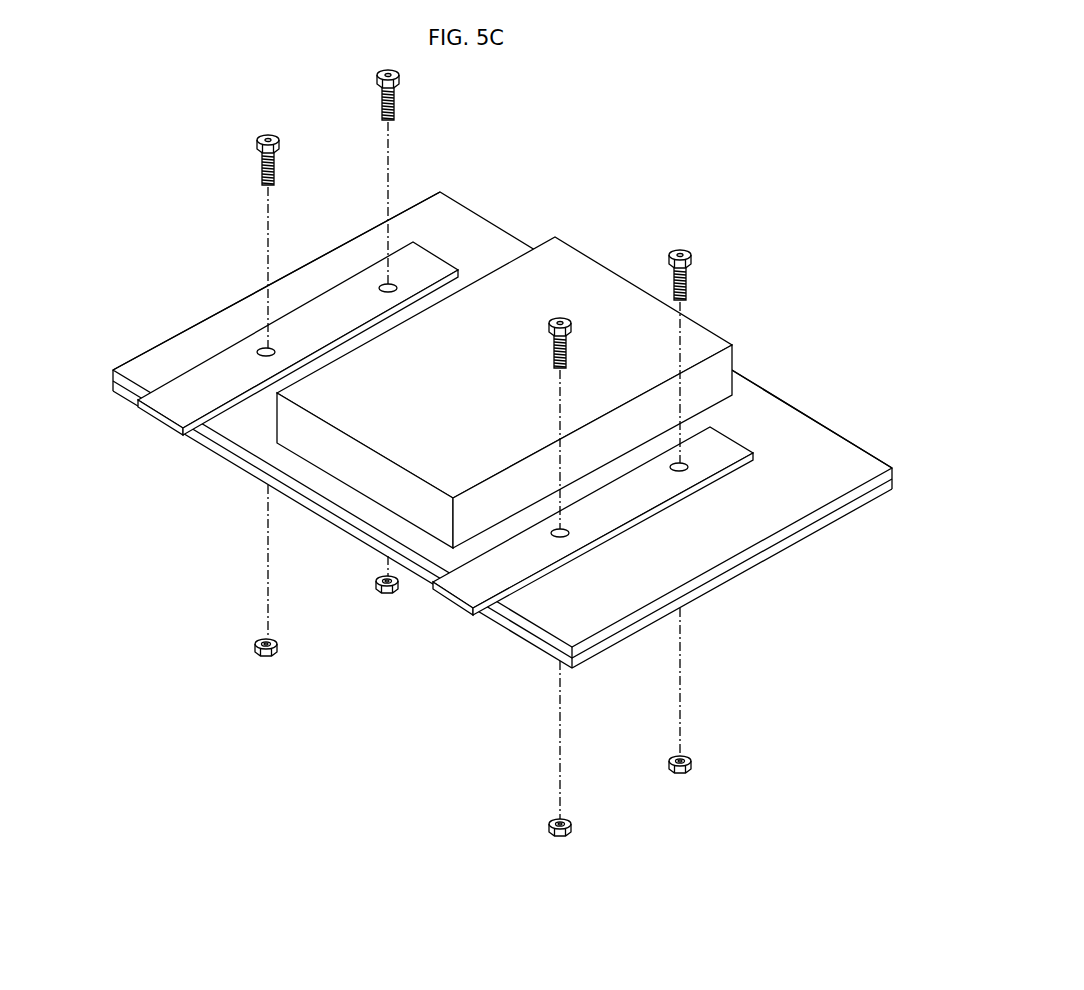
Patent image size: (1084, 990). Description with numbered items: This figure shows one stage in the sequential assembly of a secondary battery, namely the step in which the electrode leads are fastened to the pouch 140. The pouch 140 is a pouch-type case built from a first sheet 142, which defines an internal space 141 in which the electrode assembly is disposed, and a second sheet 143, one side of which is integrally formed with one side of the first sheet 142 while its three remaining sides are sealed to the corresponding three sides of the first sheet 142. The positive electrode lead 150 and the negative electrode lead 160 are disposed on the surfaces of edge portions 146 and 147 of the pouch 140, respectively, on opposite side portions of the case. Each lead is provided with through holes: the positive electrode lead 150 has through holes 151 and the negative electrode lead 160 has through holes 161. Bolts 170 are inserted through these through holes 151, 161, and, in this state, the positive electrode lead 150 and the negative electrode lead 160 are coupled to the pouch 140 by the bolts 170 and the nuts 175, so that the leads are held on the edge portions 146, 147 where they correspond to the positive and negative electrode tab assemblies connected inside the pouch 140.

The pouch 140 is at (514, 428).
The internal space 141 is at (322, 401).
The first sheet 142 is at (862, 490).
The second sheet 143 is at (842, 514).
The edge portion 146 is at (770, 512).
The edge portion 147 is at (340, 262).
The positive electrode lead 150 is at (463, 586).
The through hole 151 is at (580, 538).
The negative electrode lead 160 is at (175, 395).
The through hole 161 is at (262, 350).
The bolt 170 is at (692, 279).
The nut 175 is at (698, 764).